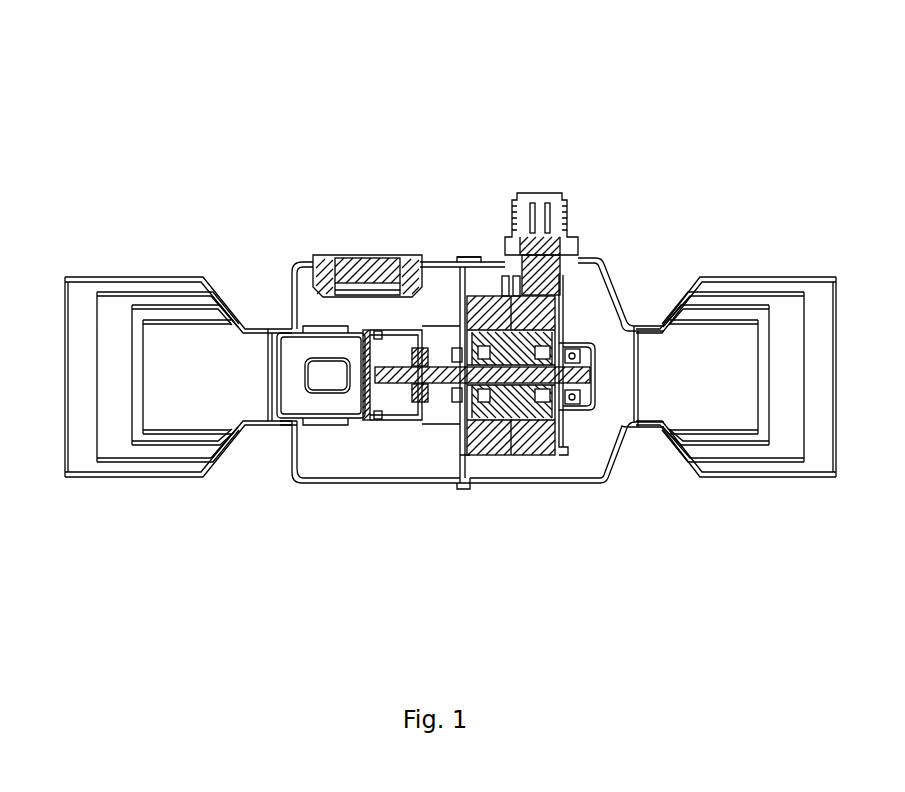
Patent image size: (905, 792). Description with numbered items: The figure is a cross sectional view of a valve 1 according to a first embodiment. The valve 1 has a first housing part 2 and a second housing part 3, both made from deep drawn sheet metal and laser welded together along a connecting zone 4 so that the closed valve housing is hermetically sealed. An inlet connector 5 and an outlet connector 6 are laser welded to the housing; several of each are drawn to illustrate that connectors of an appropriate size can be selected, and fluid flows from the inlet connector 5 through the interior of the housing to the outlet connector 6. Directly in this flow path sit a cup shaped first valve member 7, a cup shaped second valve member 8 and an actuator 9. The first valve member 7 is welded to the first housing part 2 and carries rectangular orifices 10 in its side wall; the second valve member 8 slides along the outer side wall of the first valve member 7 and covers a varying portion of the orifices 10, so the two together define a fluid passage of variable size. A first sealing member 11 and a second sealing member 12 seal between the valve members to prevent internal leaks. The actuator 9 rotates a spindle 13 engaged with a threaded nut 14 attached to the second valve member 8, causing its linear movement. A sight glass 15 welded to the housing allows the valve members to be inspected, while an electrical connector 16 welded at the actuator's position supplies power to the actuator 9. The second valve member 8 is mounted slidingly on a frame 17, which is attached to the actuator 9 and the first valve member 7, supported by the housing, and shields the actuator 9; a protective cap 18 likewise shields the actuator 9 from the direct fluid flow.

The valve 1 is at (718, 62).
The first housing part 2 is at (290, 275).
The second housing part 3 is at (613, 275).
The connecting zone 4 is at (471, 258).
The inlet connector 5 is at (703, 320).
The outlet connector 6 is at (224, 320).
The first valve member 7 is at (281, 421).
The second valve member 8 is at (398, 421).
The actuator 9 is at (533, 432).
The rectangular orifices 10 is at (326, 390).
The first sealing member 11 is at (290, 422).
The second sealing member 12 is at (371, 421).
The spindle 13 is at (422, 379).
The threaded nut 14 is at (422, 362).
The sight glass 15 is at (410, 260).
The electrical connector 16 is at (568, 212).
The frame 17 is at (461, 456).
The protective cap 18 is at (596, 398).